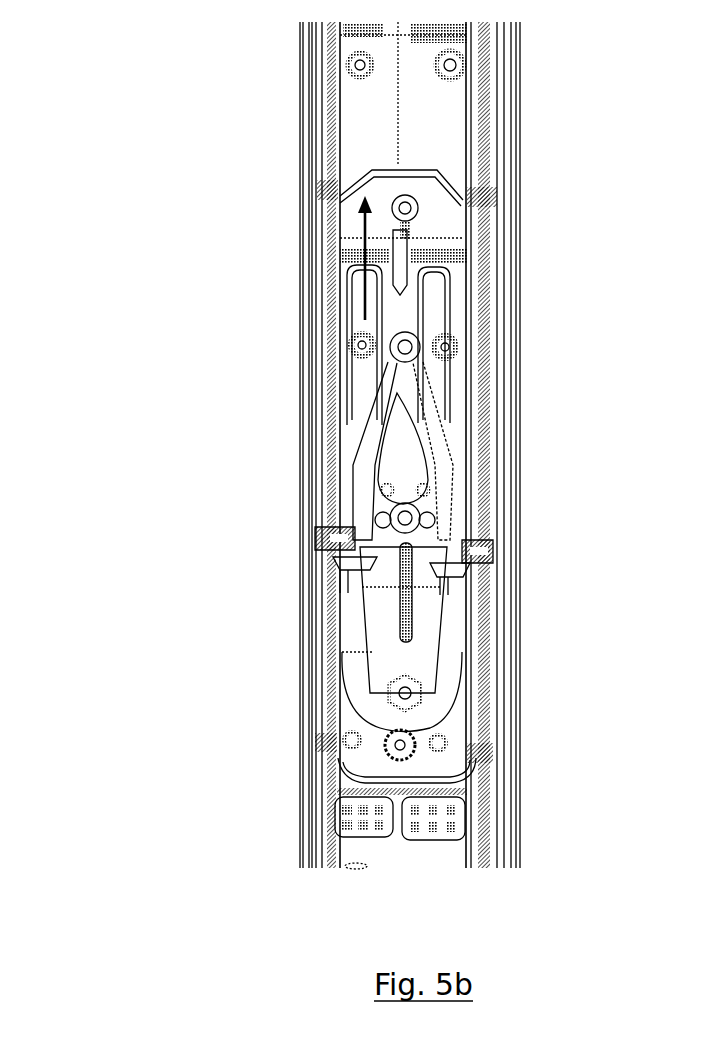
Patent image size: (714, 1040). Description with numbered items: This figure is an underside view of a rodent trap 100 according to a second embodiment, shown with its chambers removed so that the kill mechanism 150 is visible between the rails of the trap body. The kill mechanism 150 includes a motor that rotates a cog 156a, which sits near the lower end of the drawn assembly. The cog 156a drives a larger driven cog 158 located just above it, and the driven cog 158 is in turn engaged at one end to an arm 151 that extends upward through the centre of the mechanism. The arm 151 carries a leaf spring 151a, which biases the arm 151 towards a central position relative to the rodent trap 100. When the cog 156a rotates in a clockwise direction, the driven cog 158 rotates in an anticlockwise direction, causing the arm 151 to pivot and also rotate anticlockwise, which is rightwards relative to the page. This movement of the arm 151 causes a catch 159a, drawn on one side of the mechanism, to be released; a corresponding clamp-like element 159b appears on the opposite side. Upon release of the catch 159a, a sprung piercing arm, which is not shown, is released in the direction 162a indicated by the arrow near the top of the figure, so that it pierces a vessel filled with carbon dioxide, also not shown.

The rodent trap 100 is at (136, 310).
The kill mechanism 150 is at (546, 424).
The direction 162a is at (363, 288).
The leaf spring 151a is at (403, 426).
The arm 151 is at (383, 540).
The catch 159a is at (343, 557).
The right clamp 159b is at (470, 563).
The driven cog 158 is at (357, 678).
The cog 156a is at (393, 747).